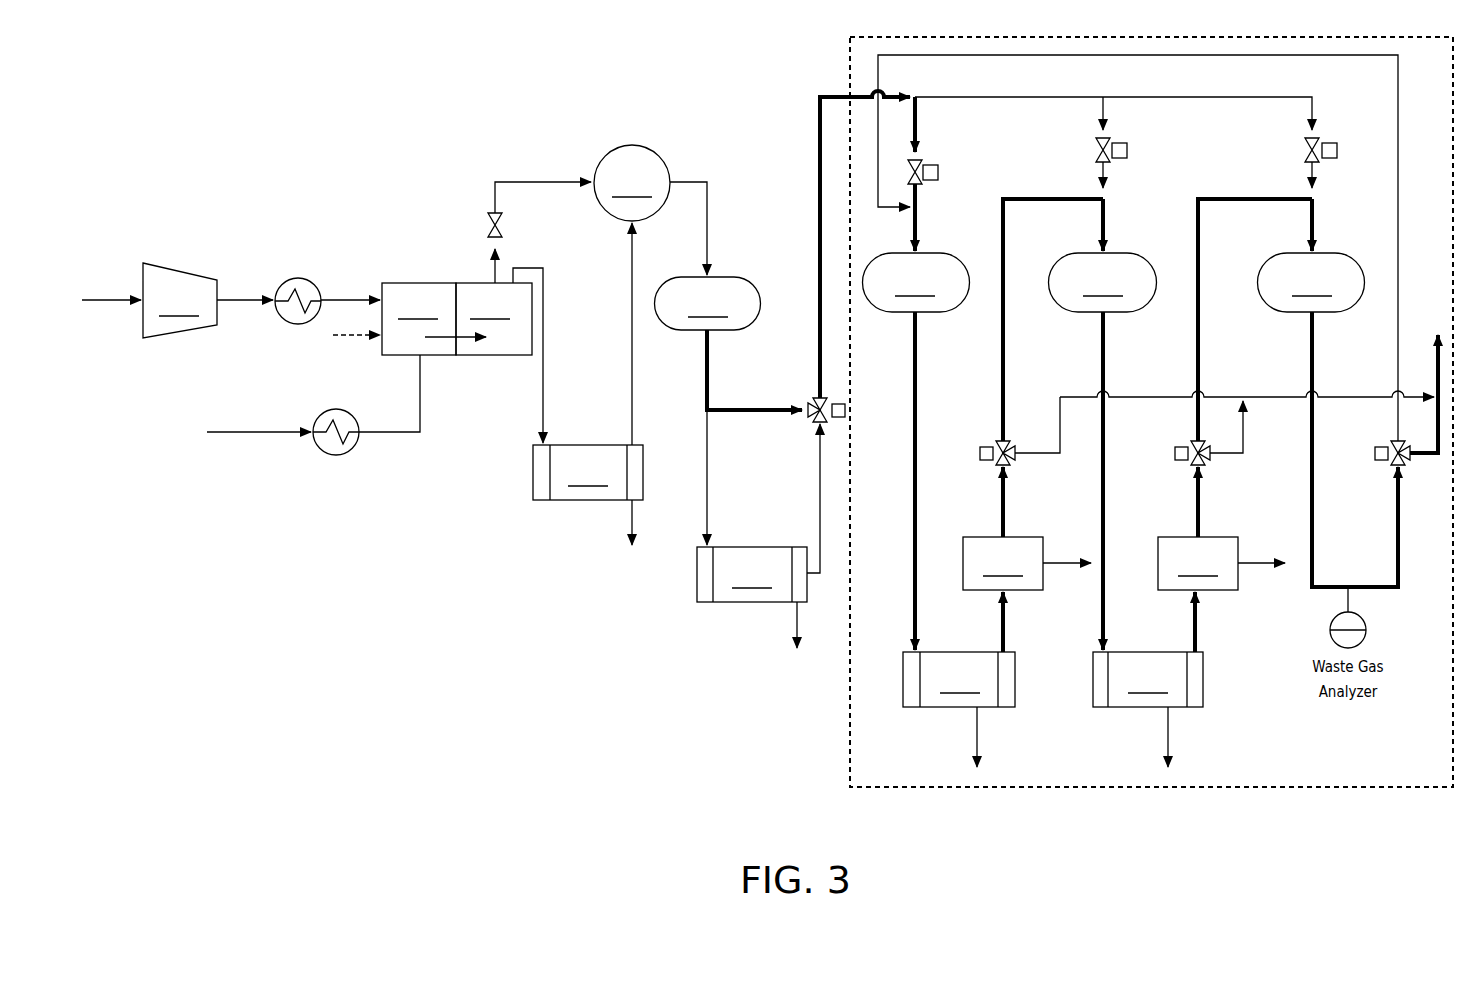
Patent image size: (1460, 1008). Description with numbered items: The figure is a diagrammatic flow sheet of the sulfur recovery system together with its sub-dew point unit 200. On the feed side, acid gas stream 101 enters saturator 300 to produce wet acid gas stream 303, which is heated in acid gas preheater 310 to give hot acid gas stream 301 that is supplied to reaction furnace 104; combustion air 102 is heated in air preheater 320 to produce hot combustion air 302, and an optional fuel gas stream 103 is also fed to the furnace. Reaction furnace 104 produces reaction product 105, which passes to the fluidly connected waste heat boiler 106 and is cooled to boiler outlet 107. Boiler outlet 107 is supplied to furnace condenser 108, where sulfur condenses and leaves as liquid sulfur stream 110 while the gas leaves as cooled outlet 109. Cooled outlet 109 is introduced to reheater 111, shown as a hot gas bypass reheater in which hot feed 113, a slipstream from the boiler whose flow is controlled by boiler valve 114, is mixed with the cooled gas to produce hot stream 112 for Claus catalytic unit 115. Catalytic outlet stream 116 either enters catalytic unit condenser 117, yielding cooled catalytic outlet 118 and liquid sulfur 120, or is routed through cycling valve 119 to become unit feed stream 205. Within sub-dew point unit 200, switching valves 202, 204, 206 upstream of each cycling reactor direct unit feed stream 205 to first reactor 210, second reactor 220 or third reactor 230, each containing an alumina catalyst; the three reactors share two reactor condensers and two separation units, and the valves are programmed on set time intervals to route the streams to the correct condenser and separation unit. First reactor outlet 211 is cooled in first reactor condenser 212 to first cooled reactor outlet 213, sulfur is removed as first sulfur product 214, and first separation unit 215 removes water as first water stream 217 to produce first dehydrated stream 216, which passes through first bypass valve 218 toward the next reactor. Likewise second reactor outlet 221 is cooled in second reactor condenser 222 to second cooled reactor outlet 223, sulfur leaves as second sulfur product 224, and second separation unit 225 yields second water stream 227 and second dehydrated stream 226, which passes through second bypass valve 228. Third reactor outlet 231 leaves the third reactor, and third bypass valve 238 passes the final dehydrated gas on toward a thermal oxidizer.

The acid gas stream 101 is at (110, 300).
The combustion air 102 is at (242, 433).
The fuel gas stream 103 is at (337, 335).
The reaction furnace 104 is at (419, 319).
The reaction product 105 is at (427, 337).
The waste heat boiler 106 is at (494, 319).
The boiler outlet 107 is at (542, 405).
The furnace condenser 108 is at (588, 472).
The cooled outlet 109 is at (630, 257).
The liquid sulfur stream 110 is at (630, 517).
The reheater 111 is at (632, 183).
The hot stream 112 is at (692, 182).
The hot feed 113 is at (540, 180).
The boiler valve 114 is at (488, 225).
The Claus catalytic unit 115 is at (708, 303).
The catalytic outlet stream 116 is at (712, 358).
The catalytic unit condenser 117 is at (752, 574).
The cooled catalytic outlet 118 is at (818, 518).
The cycling valve 119 is at (817, 398).
The liquid sulfur 120 is at (795, 615).
The sub-dew point unit 200 is at (848, 742).
The switching valve 202 is at (942, 170).
The second control valve 204 is at (1128, 153).
The unit feed stream 205 is at (818, 118).
The third control valve 206 is at (1310, 150).
The first reactor 210 is at (916, 282).
The first reactor outlet 211 is at (917, 370).
The first reactor condenser 212 is at (959, 679).
The first cooled reactor outlet 213 is at (1007, 632).
The first sulfur product 214 is at (975, 722).
The first separation unit 215 is at (1003, 563).
The first dehydrated stream 216 is at (1007, 510).
The first water stream 217 is at (1058, 560).
The first bypass valve 218 is at (990, 447).
The second reactor 220 is at (1103, 282).
The second reactor outlet 221 is at (1102, 360).
The second reactor condenser 222 is at (1148, 679).
The second cooled reactor outlet 223 is at (1197, 622).
The second sulfur product 224 is at (1165, 722).
The second separation unit 225 is at (1198, 563).
The second dehydrated stream 226 is at (1202, 500).
The second water stream 227 is at (1255, 560).
The second bypass valve 228 is at (1185, 447).
The third reactor 230 is at (1311, 282).
The third reactor outlet 231 is at (1310, 350).
The third bypass valve 238 is at (1385, 447).
The saturator 300 is at (180, 300).
The hot acid gas stream 301 is at (342, 300).
The hot combustion air 302 is at (378, 433).
The wet acid gas stream 303 is at (240, 303).
The acid gas preheater 310 is at (298, 278).
The air preheater 320 is at (332, 453).